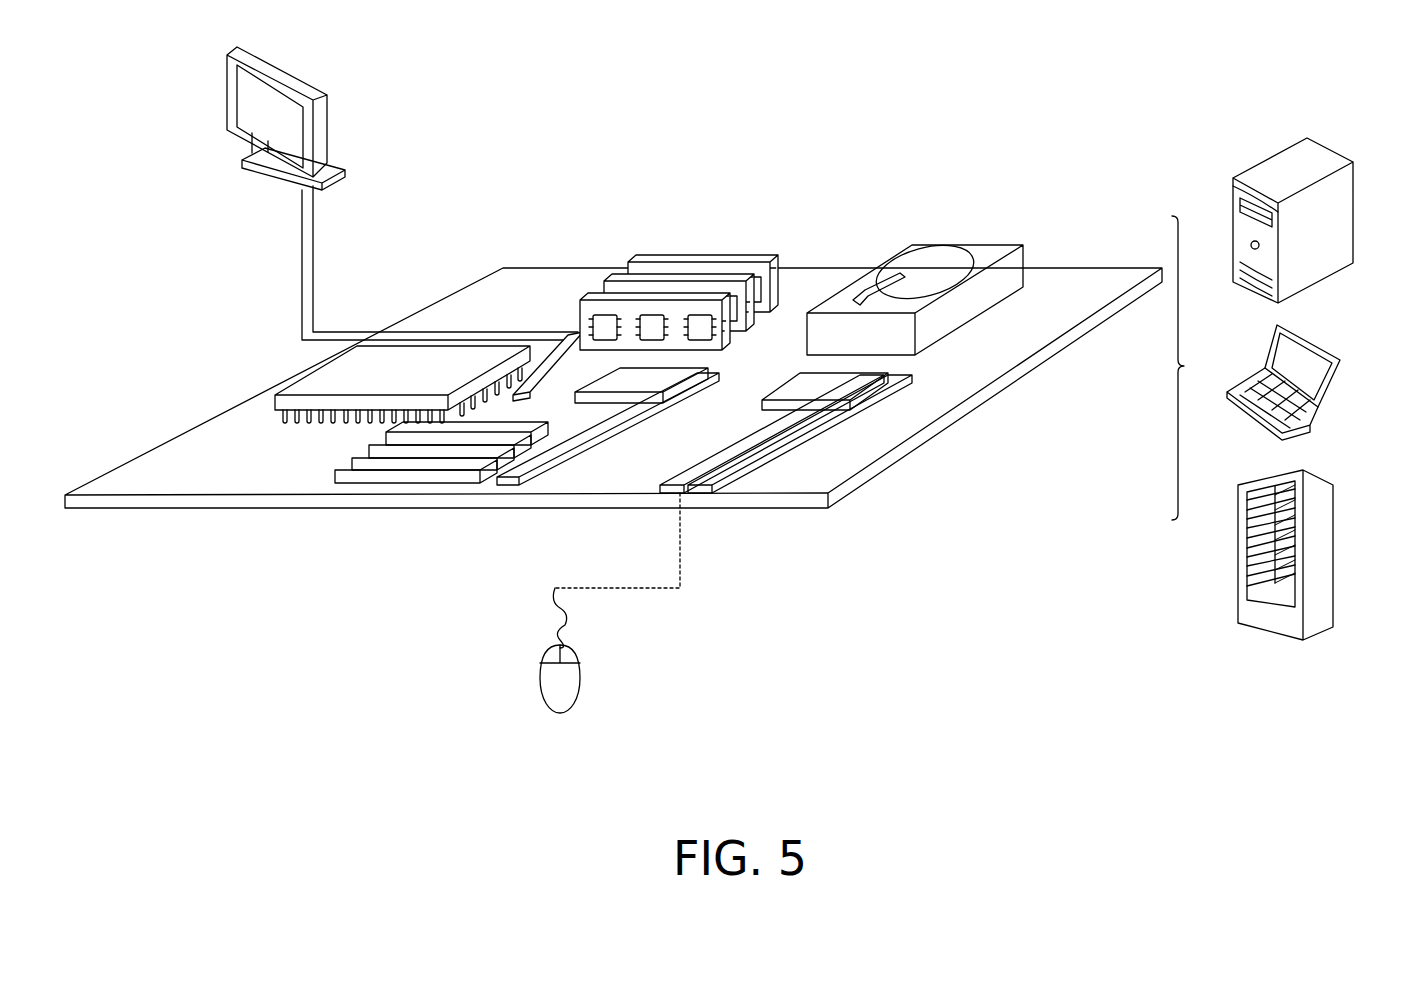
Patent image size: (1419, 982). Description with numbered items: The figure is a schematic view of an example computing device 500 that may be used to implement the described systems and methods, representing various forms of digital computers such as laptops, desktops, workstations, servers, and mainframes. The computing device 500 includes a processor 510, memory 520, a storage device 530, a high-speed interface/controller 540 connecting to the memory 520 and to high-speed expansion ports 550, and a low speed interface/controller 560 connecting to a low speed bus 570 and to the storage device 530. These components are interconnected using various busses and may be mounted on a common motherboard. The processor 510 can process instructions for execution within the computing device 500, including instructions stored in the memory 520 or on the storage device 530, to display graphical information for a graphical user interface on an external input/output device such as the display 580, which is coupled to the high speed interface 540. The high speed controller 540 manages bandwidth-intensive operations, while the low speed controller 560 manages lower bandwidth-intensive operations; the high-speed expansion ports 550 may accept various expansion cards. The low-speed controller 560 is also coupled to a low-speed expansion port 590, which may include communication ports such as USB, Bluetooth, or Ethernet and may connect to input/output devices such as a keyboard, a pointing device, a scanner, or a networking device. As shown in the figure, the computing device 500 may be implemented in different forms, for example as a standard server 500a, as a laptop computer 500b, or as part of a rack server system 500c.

The computing device 500 is at (778, 120).
The standard server 500a is at (1265, 160).
The laptop computer 500b is at (1320, 342).
The rack server system 500c is at (1328, 533).
The processor 510 is at (272, 397).
The memory 520 is at (697, 262).
The storage device 530 is at (962, 243).
The high-speed interface/controller 540 is at (641, 405).
The high-speed expansion ports 550 is at (335, 472).
The low speed interface/controller 560 is at (818, 382).
The low speed bus 570 is at (768, 447).
The display 580 is at (227, 102).
The low-speed expansion port 590 is at (692, 503).